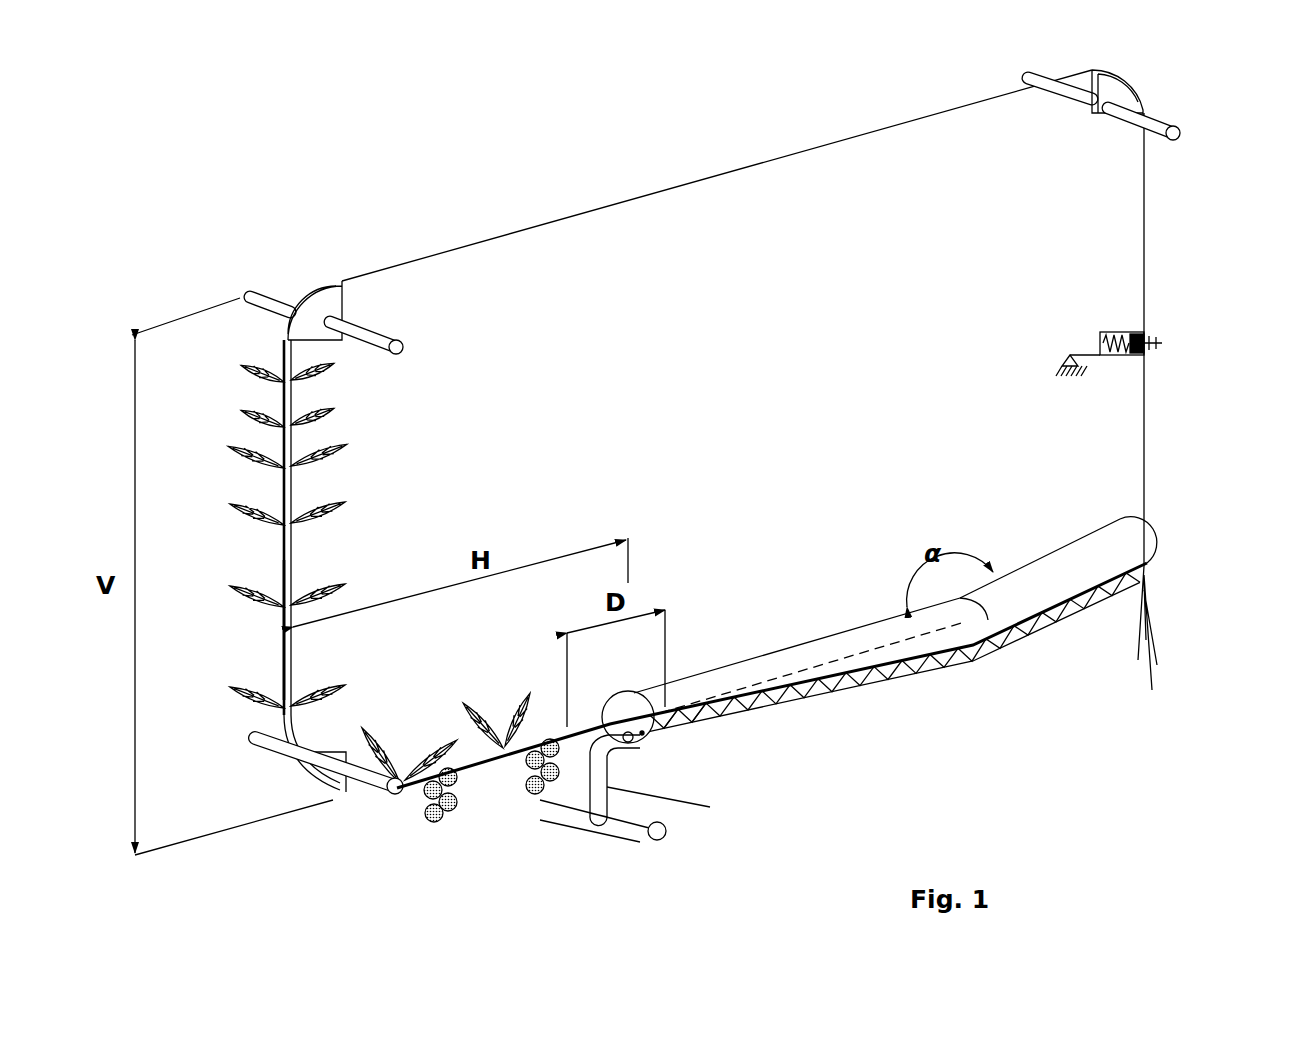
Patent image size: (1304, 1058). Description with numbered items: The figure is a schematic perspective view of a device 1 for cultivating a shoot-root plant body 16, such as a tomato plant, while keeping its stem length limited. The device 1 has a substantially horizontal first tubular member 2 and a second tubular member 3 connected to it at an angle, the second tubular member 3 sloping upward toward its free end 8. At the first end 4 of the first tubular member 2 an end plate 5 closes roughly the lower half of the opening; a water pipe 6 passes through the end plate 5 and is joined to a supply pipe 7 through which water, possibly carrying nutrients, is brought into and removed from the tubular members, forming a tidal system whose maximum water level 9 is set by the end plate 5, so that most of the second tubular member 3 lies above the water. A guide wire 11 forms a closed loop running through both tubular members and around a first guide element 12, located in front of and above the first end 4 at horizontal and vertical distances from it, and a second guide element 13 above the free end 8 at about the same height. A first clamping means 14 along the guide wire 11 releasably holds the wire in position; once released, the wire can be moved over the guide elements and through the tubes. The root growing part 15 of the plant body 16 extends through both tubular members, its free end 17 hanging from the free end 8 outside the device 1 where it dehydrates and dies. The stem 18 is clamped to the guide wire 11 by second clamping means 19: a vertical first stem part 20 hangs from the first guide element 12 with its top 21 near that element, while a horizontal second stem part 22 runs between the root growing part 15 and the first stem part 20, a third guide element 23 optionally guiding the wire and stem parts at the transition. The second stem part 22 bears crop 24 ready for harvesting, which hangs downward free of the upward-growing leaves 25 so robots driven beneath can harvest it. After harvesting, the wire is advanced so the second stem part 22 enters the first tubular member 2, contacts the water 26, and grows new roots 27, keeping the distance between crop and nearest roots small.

The device 1 is at (1205, 502).
The first tubular member 2 is at (778, 642).
The second tubular member 3 is at (1045, 550).
The first end 4 is at (623, 733).
The end plate 5 is at (647, 733).
The water pipe 6 is at (710, 807).
The supply pipe 7 is at (627, 840).
The free end 8 is at (1158, 542).
The maximum water level 9 is at (1022, 642).
The guide wire 11 is at (1146, 223).
The first guide element 12 is at (265, 294).
The second guide element 13 is at (1181, 133).
The first clamping means 14 is at (1155, 328).
The root growing part 15 is at (920, 667).
The shoot-root plant body 16 is at (360, 540).
The free end 17 is at (1150, 578).
The stem 18 is at (288, 645).
The second clamping means 19 is at (288, 403).
The first stem part 20 is at (250, 565).
The top 21 is at (272, 352).
The second stem part 22 is at (478, 760).
The third guide element 23 is at (355, 790).
The crop 24 is at (433, 822).
The leaves 25 is at (245, 688).
The water 26 is at (830, 690).
The roots 27 is at (722, 690).